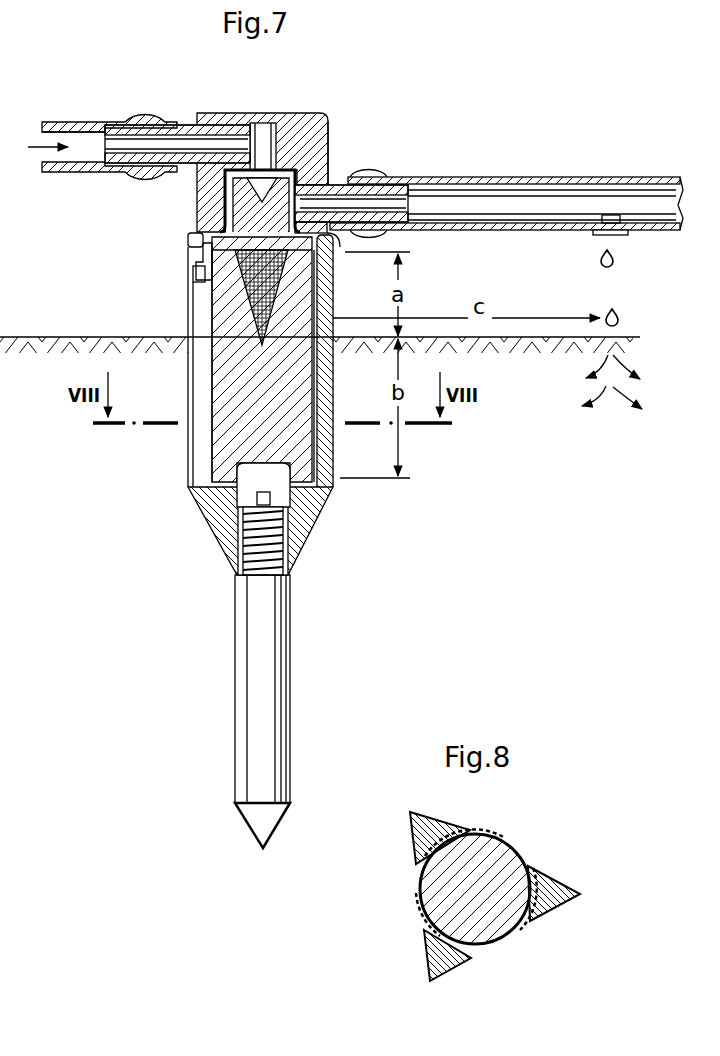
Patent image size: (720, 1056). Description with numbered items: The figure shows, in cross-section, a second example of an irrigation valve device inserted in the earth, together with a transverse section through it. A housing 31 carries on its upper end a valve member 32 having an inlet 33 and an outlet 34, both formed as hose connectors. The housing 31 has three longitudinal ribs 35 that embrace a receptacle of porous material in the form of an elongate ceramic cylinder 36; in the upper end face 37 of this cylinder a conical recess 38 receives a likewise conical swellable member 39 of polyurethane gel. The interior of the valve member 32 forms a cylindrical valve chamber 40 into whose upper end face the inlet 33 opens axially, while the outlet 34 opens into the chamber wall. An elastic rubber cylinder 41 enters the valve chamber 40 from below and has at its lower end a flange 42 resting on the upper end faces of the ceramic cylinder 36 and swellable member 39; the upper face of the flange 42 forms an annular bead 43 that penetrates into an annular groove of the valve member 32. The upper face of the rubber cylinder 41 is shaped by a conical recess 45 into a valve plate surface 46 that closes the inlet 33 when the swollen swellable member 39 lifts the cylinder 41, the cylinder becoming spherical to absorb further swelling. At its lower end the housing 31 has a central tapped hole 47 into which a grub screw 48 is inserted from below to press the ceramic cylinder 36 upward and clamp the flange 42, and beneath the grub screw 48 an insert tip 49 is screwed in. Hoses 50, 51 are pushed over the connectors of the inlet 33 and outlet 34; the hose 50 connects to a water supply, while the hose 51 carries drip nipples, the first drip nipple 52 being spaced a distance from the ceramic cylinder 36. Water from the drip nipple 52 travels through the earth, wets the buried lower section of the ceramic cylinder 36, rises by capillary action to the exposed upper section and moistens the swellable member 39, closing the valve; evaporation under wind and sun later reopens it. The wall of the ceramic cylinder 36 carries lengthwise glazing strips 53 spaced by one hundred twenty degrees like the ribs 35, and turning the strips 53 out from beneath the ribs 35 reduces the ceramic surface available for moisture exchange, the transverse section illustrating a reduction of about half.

In FIG. 7, the housing 31 is at (208, 500).
In FIG. 7, the valve member 32 is at (315, 118).
In FIG. 7, the inlet 33 is at (184, 145).
In FIG. 7, the outlet 34 is at (373, 196).
In FIG. 7, the longitudinal ribs 35 is at (325, 395).
In FIG. 8, the longitudinal ribs 35 is at (420, 838).
In FIG. 7, the ceramic cylinder 36 is at (222, 433).
In FIG. 8, the ceramic cylinder 36 is at (498, 856).
In FIG. 7, the upper end face 37 is at (206, 279).
In FIG. 7, the conical recess 38 is at (212, 347).
In FIG. 7, the swellable member 39 is at (258, 308).
In FIG. 7, the valve chamber 40 is at (328, 145).
In FIG. 7, the rubber cylinder 41 is at (230, 201).
In FIG. 7, the flange 42 is at (212, 246).
In FIG. 7, the annular bead 43 is at (203, 233).
In FIG. 7, the conical recess 45 is at (293, 174).
In FIG. 7, the valve plate surface 46 is at (238, 182).
In FIG. 7, the tapped hole 47 is at (242, 512).
In FIG. 7, the grub screw 48 is at (282, 494).
In FIG. 7, the insert tip 49 is at (278, 645).
In FIG. 7, the hose 50 is at (66, 121).
In FIG. 7, the hose 51 is at (512, 177).
In FIG. 7, the drip nipple 52 is at (598, 236).
In FIG. 8, the glazing strips 53 is at (472, 838).